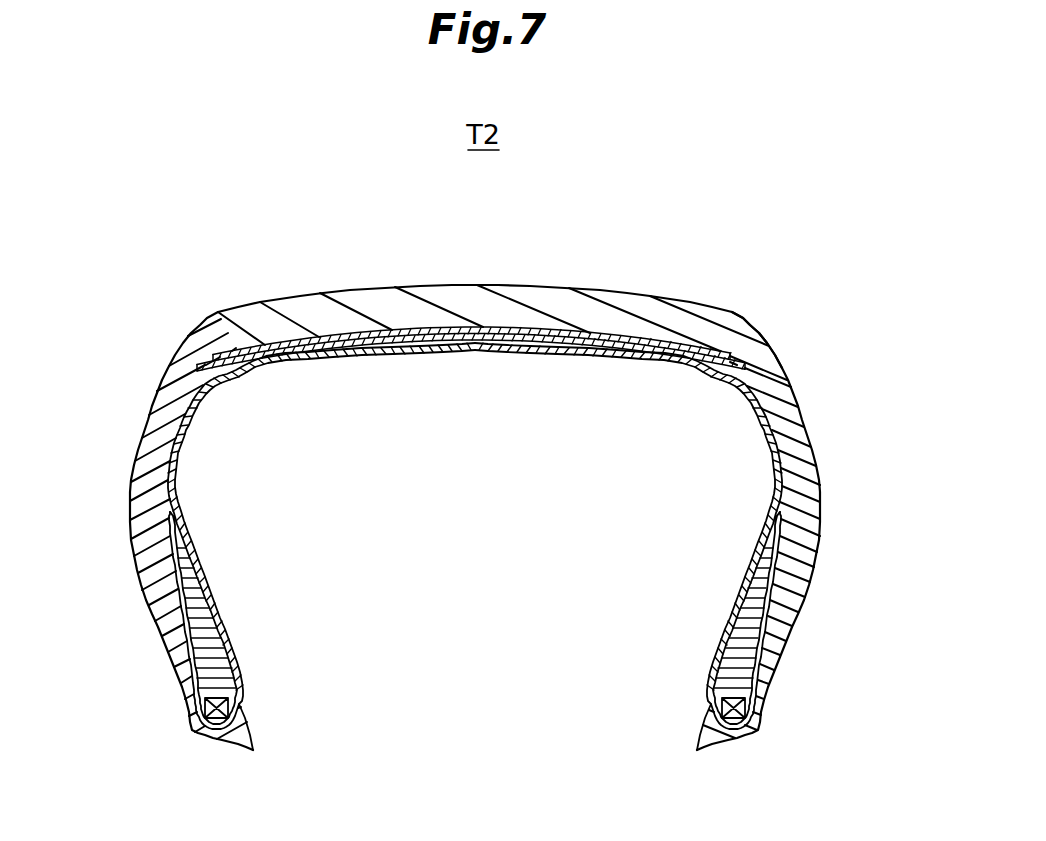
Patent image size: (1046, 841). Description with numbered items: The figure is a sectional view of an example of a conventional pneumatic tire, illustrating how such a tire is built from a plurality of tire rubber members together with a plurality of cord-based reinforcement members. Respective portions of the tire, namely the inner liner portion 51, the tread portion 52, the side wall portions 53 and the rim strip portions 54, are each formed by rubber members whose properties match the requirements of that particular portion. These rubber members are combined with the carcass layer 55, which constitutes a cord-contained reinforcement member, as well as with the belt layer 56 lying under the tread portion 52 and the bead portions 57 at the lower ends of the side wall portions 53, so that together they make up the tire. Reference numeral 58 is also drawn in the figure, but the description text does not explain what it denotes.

The inner liner portion 51 is at (488, 351).
The tread portion 52 is at (456, 308).
The side wall portions 53 is at (155, 432).
The rim strip portions 54 is at (163, 607).
The carcass layer 55 is at (743, 600).
The belt layer 56 is at (358, 337).
The bead portions 57 is at (228, 709).
The shoulder portion 58 is at (765, 365).